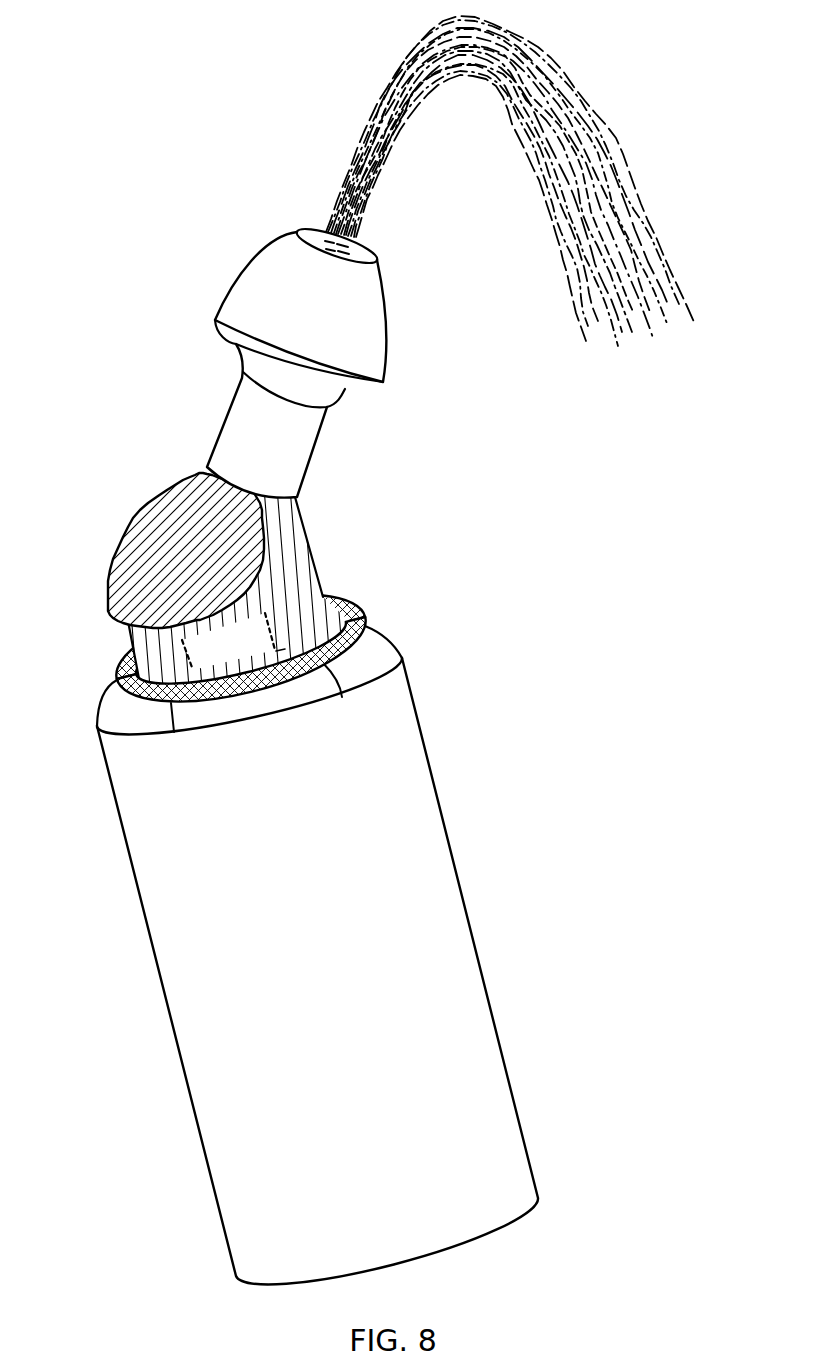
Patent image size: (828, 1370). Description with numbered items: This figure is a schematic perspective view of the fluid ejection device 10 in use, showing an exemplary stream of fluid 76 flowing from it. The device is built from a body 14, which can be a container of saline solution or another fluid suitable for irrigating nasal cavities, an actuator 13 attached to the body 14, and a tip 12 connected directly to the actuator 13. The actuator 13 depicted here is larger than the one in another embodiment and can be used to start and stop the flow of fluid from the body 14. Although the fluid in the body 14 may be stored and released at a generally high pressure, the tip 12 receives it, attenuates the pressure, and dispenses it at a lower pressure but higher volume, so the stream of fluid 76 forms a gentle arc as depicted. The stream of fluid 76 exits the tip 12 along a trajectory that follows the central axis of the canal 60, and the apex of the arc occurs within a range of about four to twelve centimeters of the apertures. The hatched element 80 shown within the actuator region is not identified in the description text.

The fluid ejection device 10 is at (542, 539).
The tip 12 is at (308, 466).
The actuator 13 is at (84, 470).
The body 14 is at (443, 827).
The canal 60 is at (279, 650).
The stream of fluid 76 is at (347, 173).
The ball 80 is at (205, 569).